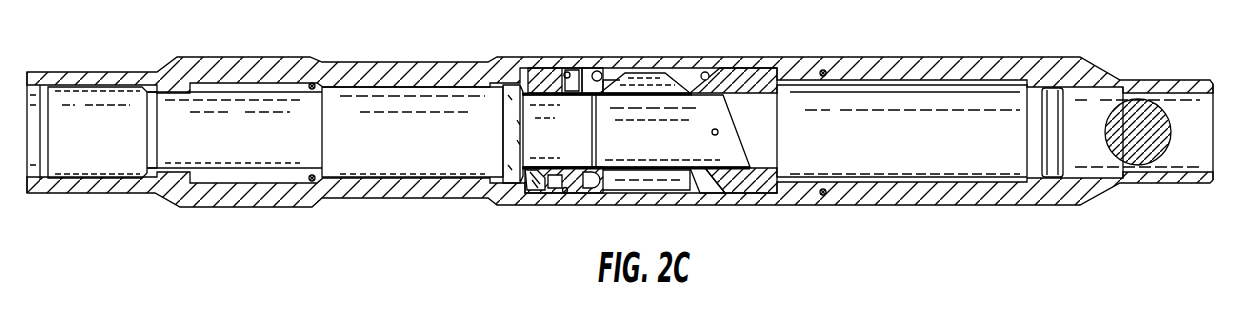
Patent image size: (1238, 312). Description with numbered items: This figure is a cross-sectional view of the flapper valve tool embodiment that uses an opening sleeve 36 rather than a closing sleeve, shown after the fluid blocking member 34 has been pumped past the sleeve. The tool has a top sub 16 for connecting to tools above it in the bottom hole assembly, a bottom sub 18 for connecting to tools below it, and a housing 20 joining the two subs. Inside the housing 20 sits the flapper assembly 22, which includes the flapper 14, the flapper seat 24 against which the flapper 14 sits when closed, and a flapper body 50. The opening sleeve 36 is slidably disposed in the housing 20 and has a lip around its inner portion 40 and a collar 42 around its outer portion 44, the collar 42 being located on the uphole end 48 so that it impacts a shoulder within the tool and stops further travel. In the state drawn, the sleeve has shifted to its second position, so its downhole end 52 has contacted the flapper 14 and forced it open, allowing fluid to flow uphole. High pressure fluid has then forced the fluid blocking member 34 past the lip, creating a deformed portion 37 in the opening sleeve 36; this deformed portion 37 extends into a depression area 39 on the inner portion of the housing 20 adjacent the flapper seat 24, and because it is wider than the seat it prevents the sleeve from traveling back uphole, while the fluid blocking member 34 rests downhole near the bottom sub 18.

The flapper 14 is at (650, 82).
The top sub 16 is at (120, 84).
The bottom sub 18 is at (1113, 85).
The housing 20 is at (366, 76).
The flapper assembly 22 is at (548, 53).
The flapper seat 24 is at (583, 191).
The fluid blocking member 34 is at (1167, 152).
The opening sleeve 36 is at (690, 168).
The deformed portion 37 is at (610, 181).
The depression area 39 is at (636, 181).
The inner portion 40 is at (681, 158).
The collar 42 is at (525, 46).
The outer portion 44 is at (700, 179).
The uphole end 48 is at (503, 131).
The flapper body 50 is at (712, 82).
The downhole end 52 is at (745, 131).